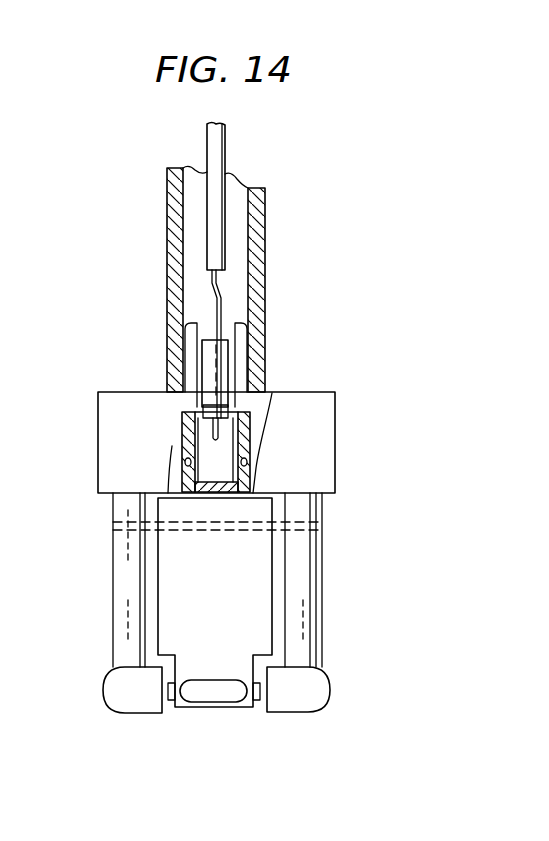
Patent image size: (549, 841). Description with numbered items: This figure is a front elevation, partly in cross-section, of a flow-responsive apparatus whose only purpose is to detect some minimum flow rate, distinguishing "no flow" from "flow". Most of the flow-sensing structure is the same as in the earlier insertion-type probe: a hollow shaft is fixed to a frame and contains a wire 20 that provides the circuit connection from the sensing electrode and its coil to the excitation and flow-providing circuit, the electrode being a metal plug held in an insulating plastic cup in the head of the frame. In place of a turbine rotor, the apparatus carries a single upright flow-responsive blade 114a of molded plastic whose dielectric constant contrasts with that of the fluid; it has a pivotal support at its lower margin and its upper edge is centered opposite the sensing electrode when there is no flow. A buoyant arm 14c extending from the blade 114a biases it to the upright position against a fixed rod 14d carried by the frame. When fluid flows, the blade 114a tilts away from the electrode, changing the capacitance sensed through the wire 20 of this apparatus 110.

The electrode assembly 110 is at (150, 243).
The wire 20 is at (222, 148).
The flow-responsive blade 114a is at (242, 633).
The fixed rod 14d is at (190, 531).
The buoyant arm 14c is at (197, 696).